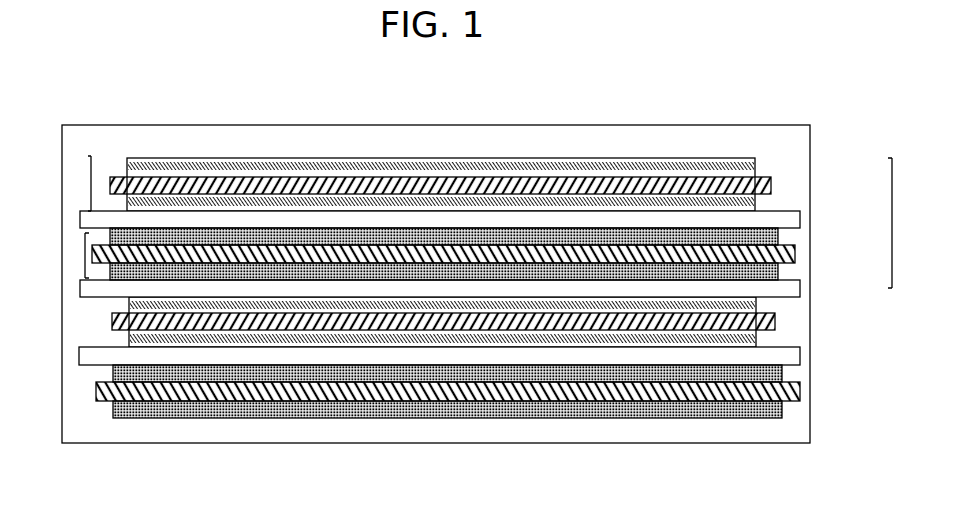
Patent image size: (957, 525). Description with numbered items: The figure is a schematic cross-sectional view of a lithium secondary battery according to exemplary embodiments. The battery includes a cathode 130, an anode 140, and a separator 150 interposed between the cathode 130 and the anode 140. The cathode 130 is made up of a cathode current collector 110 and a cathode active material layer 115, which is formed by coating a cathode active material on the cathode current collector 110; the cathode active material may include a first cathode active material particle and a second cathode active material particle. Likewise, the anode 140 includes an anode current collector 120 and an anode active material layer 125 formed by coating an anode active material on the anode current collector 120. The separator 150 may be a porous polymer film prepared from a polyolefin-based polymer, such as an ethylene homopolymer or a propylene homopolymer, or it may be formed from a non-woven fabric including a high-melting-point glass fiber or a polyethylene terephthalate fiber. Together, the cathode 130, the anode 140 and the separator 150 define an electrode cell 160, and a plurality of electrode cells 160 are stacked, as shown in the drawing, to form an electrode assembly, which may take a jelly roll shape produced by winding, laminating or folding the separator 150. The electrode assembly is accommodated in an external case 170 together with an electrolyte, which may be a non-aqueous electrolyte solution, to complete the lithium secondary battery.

The cathode current collector 110 is at (771, 181).
The cathode active material layer 115 is at (755, 162).
The anode current collector 120 is at (795, 253).
The anode active material layer 125 is at (778, 236).
The cathode 130 is at (91, 175).
The anode 140 is at (85, 265).
The separator 150 is at (78, 223).
The electrode cell 160 is at (892, 222).
The external case 170 is at (192, 443).